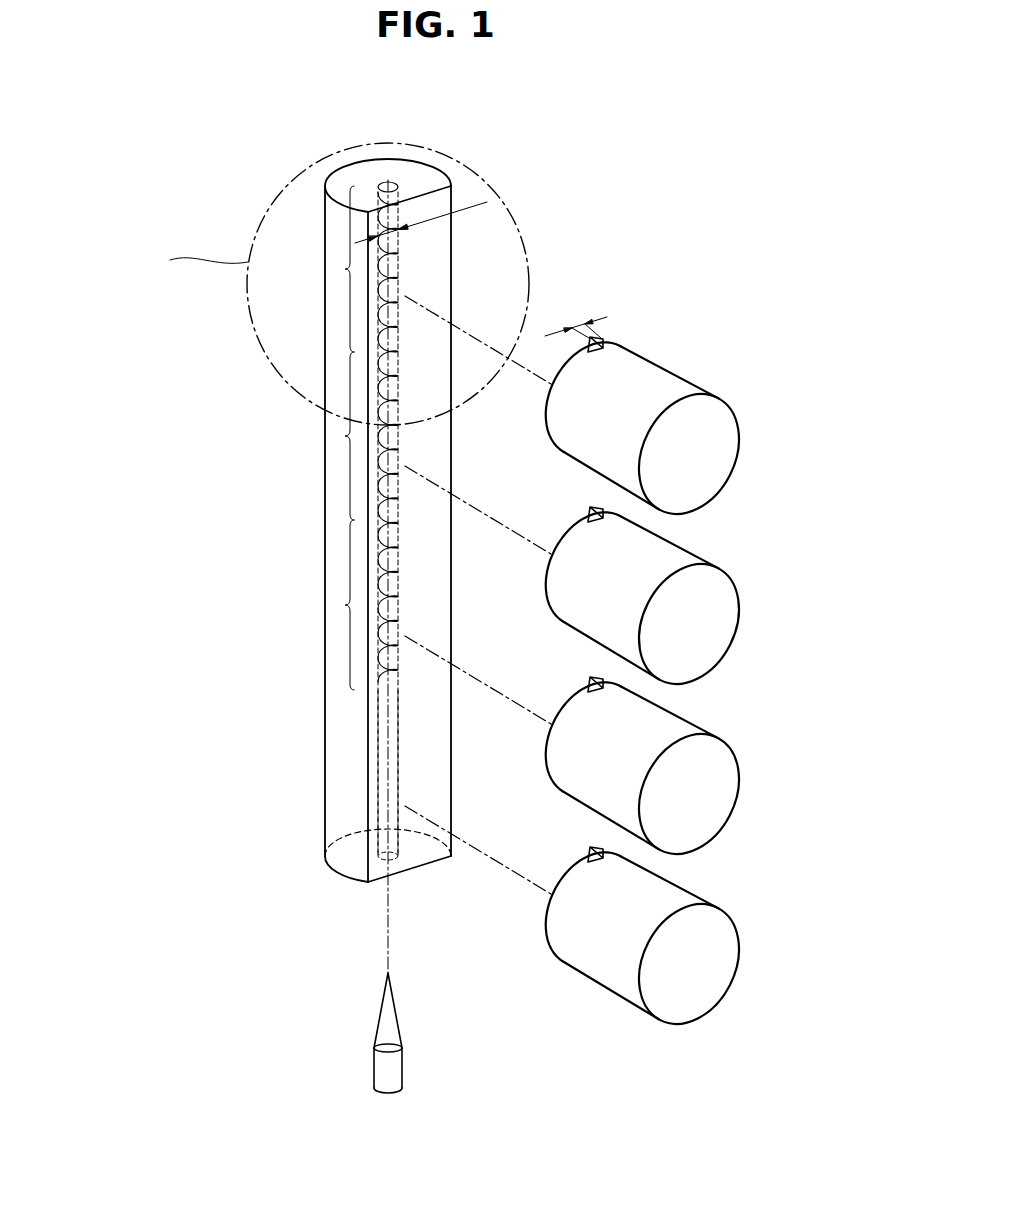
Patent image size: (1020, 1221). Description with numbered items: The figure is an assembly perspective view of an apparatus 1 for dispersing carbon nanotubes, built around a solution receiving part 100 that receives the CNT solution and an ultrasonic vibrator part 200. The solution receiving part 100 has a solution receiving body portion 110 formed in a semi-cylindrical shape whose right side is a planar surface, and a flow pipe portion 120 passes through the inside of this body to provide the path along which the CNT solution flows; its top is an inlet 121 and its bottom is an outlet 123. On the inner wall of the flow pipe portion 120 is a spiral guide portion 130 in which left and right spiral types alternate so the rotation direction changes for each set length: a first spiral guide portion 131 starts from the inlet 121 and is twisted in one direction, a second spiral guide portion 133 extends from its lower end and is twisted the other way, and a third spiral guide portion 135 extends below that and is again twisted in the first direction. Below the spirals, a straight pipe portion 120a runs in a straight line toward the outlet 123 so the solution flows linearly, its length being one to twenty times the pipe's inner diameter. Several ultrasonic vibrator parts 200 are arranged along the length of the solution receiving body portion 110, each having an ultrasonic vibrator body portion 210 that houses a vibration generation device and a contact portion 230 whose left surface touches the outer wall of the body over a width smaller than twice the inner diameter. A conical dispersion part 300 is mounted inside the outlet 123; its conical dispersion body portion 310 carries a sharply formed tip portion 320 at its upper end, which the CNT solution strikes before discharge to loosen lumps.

The apparatus for dispersing carbon nanotubes 1 is at (699, 87).
The solution receiving part 100 is at (160, 572).
The solution receiving body portion 110 is at (340, 688).
The flow pipe portion 120 is at (390, 312).
The straight pipe portion 120a is at (378, 776).
The inlet 121 is at (386, 187).
The outlet 123 is at (382, 858).
The spiral guide portion 130 is at (182, 347).
The first spiral guide portion 131 is at (347, 270).
The second spiral guide portion 133 is at (347, 436).
The third spiral guide portion 135 is at (347, 605).
The ultrasonic vibrator part 200 is at (678, 276).
The ultrasonic vibrator body portion 210 is at (680, 388).
The contact portion 230 is at (600, 340).
The conical dispersion part 300 is at (279, 1008).
The conical dispersion body portion 310 is at (390, 1035).
The tip portion 320 is at (380, 986).